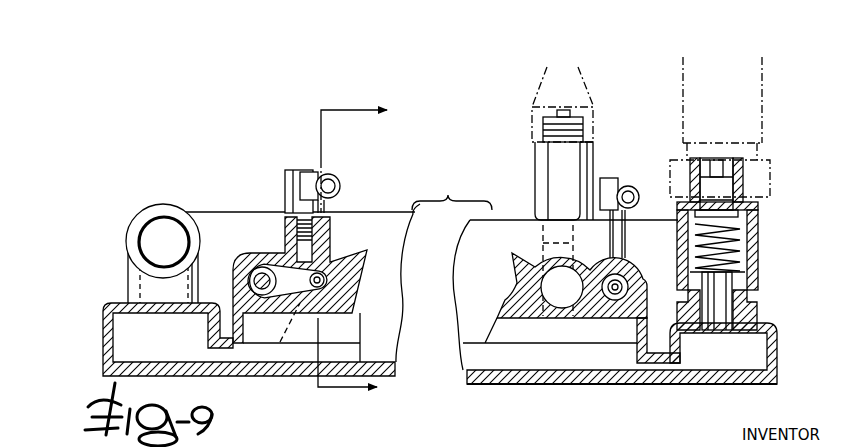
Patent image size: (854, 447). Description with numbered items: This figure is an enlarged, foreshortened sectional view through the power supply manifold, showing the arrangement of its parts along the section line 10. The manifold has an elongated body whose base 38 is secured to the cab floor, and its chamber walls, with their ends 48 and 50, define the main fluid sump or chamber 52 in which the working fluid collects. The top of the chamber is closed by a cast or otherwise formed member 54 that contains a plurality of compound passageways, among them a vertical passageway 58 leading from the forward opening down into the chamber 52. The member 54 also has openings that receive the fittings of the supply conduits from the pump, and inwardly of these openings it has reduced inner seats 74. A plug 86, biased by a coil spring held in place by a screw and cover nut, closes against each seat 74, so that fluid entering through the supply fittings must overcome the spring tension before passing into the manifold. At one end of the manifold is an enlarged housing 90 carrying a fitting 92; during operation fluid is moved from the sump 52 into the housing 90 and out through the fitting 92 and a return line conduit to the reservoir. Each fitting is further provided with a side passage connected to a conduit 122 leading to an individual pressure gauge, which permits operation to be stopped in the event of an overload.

The section line 10- 10 is at (353, 245).
The base 38 is at (537, 382).
The end 48 is at (780, 360).
The end 50 is at (103, 337).
The main fluid sump or chamber 52 is at (595, 363).
The chamber top member 54 is at (268, 252).
The vertical passageway 58 is at (283, 333).
The reduced inner seat 74 is at (322, 272).
The plug 86 is at (325, 283).
The enlarged housing 90 is at (115, 307).
The fitting 92 is at (163, 208).
The conduit 122 is at (330, 170).